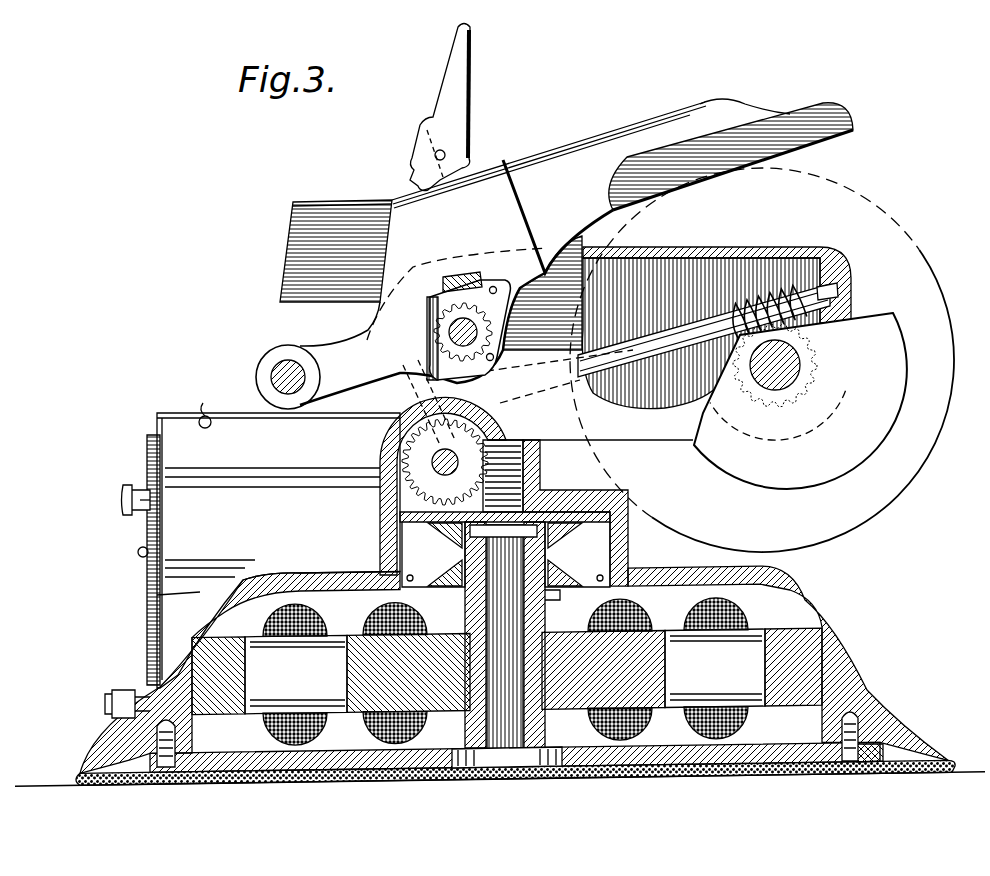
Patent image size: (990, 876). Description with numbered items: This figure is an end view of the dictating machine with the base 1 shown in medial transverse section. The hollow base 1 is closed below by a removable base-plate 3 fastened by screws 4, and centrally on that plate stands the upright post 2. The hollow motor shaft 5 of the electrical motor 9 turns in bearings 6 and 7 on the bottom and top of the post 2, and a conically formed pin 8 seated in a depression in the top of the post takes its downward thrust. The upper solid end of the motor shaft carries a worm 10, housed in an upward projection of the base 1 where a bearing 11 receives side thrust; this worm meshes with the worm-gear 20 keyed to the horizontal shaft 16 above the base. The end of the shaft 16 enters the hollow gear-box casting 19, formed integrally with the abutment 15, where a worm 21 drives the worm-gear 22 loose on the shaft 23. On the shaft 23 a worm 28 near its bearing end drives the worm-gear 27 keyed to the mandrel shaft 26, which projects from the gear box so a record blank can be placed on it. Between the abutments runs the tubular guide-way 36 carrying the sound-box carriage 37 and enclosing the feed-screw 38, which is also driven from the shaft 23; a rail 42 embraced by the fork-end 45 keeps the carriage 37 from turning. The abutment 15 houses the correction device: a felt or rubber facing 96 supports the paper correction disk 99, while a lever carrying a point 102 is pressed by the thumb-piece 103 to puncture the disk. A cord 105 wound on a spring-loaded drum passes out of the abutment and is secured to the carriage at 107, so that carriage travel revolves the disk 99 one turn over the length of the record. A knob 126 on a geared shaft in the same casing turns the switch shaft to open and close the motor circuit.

The base 1 is at (813, 603).
The upright post 2 is at (495, 717).
The base-plate 3 is at (348, 762).
The screws 4 is at (177, 742).
The hollow motor shaft 5 is at (540, 598).
The bearing 6 is at (528, 725).
The bearing 7 is at (478, 593).
The conically formed pin 8 is at (463, 553).
The electrical motor 9 is at (323, 612).
The worm 10 is at (500, 440).
The bearing 11 is at (540, 463).
The abutment 15 is at (250, 526).
The horizontal shaft 16 is at (400, 455).
The casting 19 is at (668, 242).
The worm-gear 20 is at (392, 503).
The worm 21 is at (397, 477).
The worm-gear 22 is at (422, 342).
The shaft 23 is at (614, 348).
The mandrel shaft 26 is at (793, 373).
The worm-gear 27 is at (760, 373).
The worm 28 is at (754, 285).
The guide-way 36 is at (440, 338).
The sound-box carriage 37 is at (483, 193).
The feed-screw 38 is at (430, 300).
The rail 42 is at (277, 378).
The fork-end 45 is at (285, 358).
The facing 96 is at (152, 440).
The correction disk 99 is at (158, 600).
The point 102 is at (146, 506).
The thumb-piece 103 is at (126, 492).
The cord 105 is at (206, 416).
The carriage attachment 107 is at (207, 420).
The knob 126 is at (120, 703).